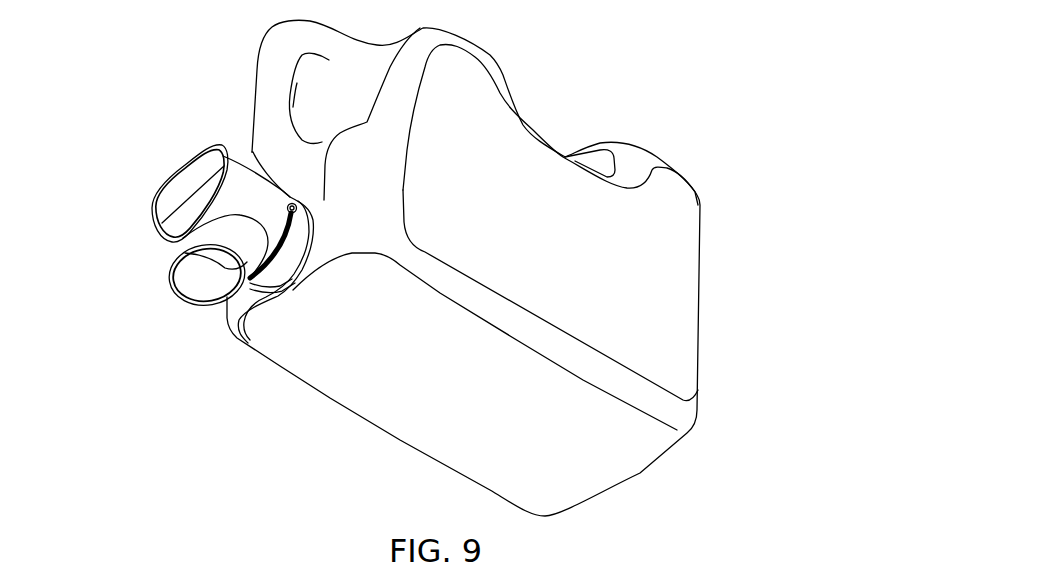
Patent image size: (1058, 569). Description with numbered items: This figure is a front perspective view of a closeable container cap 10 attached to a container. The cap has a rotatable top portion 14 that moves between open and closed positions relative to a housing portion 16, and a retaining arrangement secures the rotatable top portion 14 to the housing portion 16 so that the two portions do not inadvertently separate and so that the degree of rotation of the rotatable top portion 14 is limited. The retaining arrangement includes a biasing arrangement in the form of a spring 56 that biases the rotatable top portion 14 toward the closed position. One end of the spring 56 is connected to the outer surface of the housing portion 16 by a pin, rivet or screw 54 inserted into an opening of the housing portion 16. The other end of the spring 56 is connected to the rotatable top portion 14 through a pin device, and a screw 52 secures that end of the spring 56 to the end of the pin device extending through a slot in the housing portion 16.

The container cap 10 is at (107, 48).
The rotatable top portion 14 is at (173, 223).
The housing portion 16 is at (183, 160).
The screw 52 is at (251, 278).
The pin, rivet or screw 54 is at (256, 173).
The spring 56 is at (285, 240).